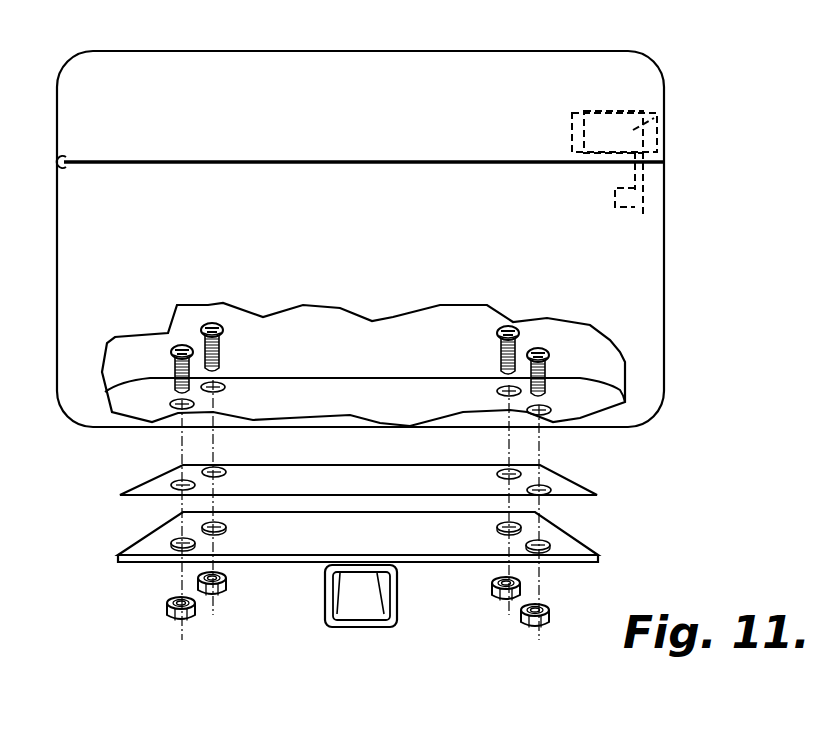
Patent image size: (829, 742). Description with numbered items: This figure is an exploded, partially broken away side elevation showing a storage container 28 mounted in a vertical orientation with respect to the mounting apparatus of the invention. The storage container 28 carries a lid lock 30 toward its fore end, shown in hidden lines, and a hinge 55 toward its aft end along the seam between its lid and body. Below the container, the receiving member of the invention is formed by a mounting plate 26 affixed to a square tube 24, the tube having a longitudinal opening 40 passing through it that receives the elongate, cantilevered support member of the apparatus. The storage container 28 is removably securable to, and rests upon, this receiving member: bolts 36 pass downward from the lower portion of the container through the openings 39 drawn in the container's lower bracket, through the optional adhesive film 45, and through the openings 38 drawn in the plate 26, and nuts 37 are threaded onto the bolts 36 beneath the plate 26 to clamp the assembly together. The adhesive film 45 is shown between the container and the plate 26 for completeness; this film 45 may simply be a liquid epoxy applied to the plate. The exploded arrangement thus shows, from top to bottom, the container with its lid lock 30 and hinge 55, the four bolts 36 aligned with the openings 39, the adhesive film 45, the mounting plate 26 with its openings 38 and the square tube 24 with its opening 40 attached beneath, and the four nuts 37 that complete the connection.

The square tube 24 is at (366, 628).
The mounting plate 26 is at (317, 535).
The storage container 28 is at (430, 128).
The lid lock 30 is at (650, 119).
The bolts 36 is at (212, 322).
The nuts 37 is at (212, 598).
The plate holes 38 is at (200, 527).
The bracket holes 39 is at (195, 407).
The longitudinal opening 40 is at (362, 607).
The adhesive film 45 is at (410, 480).
The hinge 55 is at (56, 159).